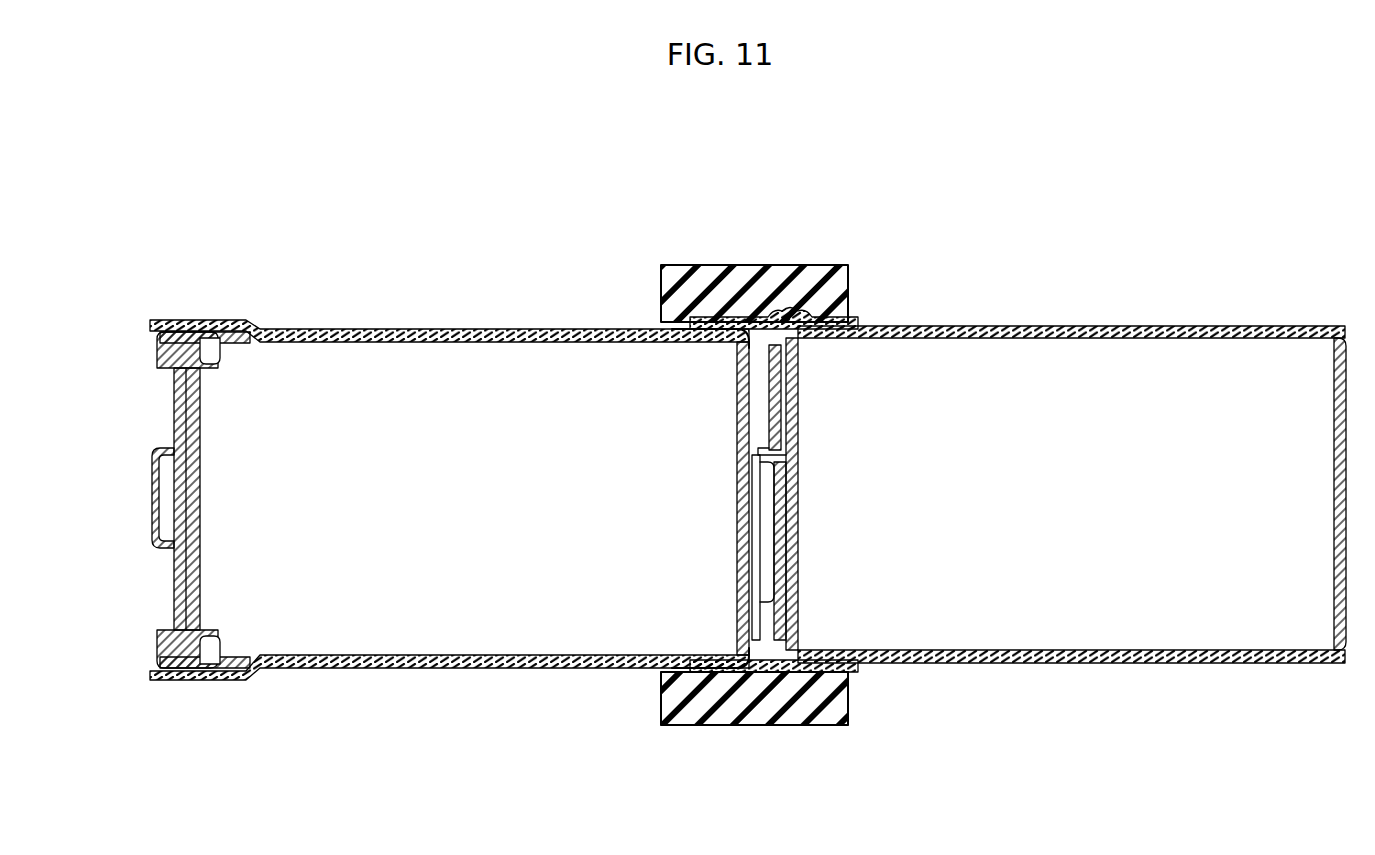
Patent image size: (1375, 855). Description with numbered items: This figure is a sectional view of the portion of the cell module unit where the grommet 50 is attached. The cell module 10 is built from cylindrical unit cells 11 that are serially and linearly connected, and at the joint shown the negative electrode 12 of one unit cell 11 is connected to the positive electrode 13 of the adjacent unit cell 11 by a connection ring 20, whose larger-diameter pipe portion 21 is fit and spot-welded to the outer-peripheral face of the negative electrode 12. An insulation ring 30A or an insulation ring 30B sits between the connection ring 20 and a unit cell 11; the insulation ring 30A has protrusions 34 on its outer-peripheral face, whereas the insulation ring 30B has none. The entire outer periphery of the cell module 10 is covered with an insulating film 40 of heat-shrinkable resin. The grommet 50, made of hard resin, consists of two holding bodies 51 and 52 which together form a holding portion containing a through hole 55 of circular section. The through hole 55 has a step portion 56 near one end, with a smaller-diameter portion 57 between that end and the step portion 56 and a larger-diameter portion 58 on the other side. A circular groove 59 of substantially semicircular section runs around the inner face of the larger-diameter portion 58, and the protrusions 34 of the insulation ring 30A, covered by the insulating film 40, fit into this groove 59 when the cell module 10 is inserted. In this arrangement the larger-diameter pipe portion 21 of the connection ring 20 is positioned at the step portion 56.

The cell module 10 is at (1086, 256).
The unit cell 11 is at (435, 668).
The negative electrode 12 is at (758, 568).
The positive electrode 13 is at (772, 438).
The connection ring 20 is at (710, 330).
The larger-diameter pipe portion 21 is at (702, 680).
The insulation ring 30A is at (836, 262).
The insulation ring 30B is at (160, 352).
The protrusion 34 is at (785, 316).
The insulating film 40 is at (1215, 326).
The grommet 50 is at (752, 300).
The holding body 51 is at (738, 316).
The holding body 52 is at (760, 725).
The through hole 55 is at (727, 700).
The step portion 56 is at (672, 725).
The smaller-diameter portion 57 is at (672, 678).
The larger-diameter portion 58 is at (846, 700).
The groove 59 is at (795, 700).